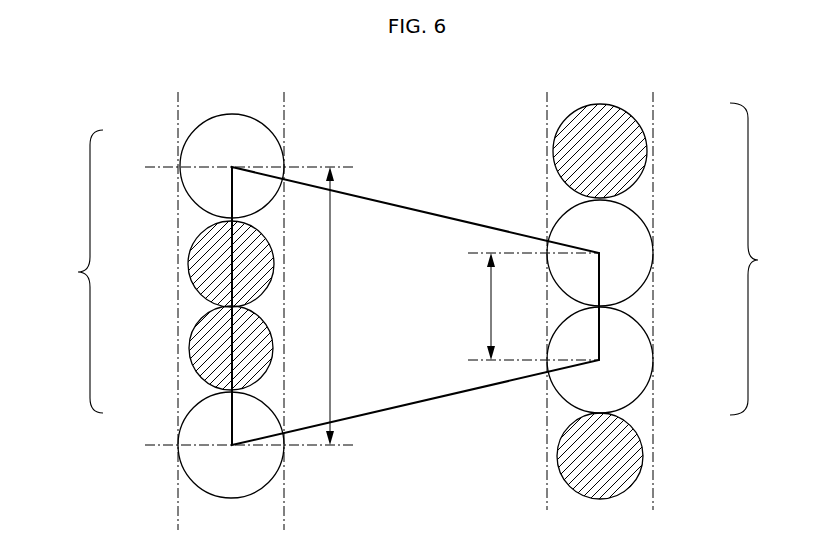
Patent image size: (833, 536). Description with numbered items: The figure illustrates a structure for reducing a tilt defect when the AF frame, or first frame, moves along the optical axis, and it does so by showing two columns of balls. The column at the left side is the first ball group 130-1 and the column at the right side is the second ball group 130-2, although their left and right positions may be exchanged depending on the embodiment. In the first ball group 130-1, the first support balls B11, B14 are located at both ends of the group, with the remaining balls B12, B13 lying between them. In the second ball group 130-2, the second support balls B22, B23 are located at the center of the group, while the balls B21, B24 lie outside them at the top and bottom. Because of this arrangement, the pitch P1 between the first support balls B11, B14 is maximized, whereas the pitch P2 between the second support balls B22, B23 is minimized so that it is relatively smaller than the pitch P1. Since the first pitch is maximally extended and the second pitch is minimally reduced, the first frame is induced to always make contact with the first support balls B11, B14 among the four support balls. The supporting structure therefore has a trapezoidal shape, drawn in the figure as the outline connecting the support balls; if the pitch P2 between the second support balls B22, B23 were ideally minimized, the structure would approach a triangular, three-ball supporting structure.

The first ball group 130-1 is at (154, 306).
The second ball group 130-2 is at (679, 300).
The first support ball B11 is at (190, 152).
The ball of the first ball group B12 is at (198, 251).
The ball of the first ball group B13 is at (199, 336).
The first support ball B14 is at (189, 429).
The ball of the second ball group B21 is at (632, 135).
The second support ball B22 is at (635, 228).
The second support ball B23 is at (628, 328).
The ball of the second ball group B24 is at (632, 437).
The pitch between the first support balls P1 is at (343, 306).
The pitch between the second support balls P2 is at (477, 306).